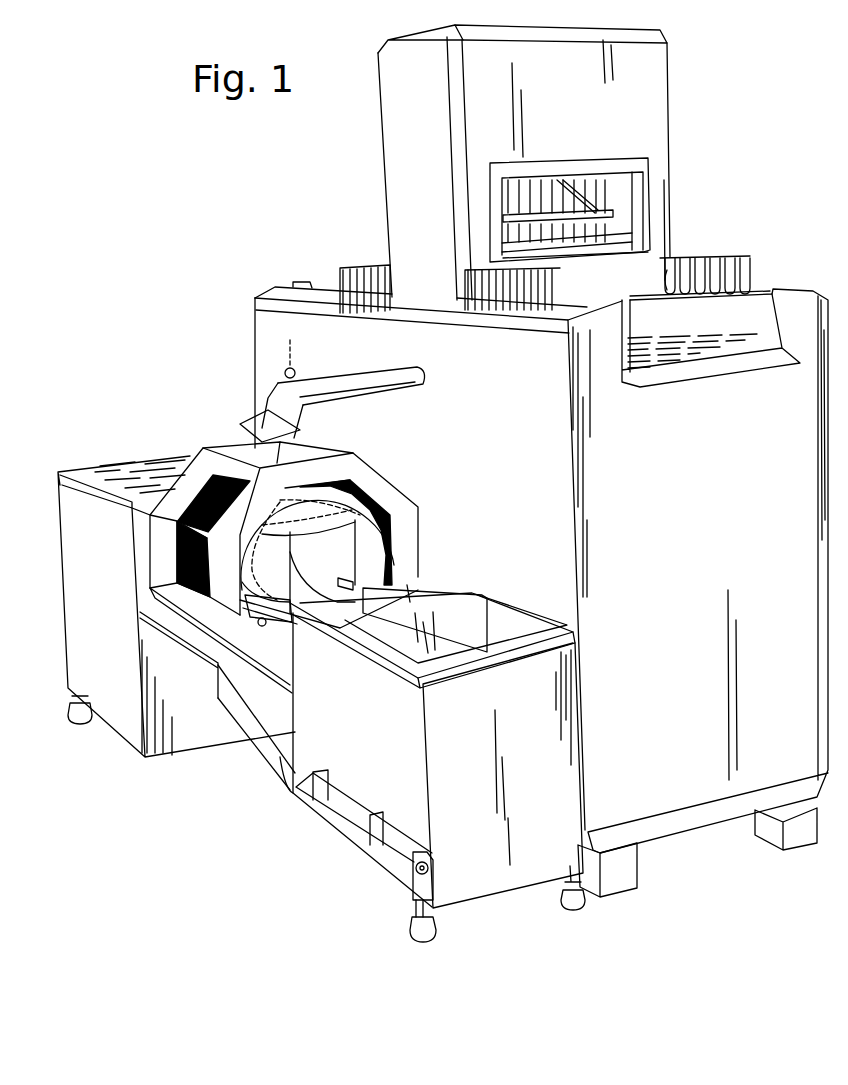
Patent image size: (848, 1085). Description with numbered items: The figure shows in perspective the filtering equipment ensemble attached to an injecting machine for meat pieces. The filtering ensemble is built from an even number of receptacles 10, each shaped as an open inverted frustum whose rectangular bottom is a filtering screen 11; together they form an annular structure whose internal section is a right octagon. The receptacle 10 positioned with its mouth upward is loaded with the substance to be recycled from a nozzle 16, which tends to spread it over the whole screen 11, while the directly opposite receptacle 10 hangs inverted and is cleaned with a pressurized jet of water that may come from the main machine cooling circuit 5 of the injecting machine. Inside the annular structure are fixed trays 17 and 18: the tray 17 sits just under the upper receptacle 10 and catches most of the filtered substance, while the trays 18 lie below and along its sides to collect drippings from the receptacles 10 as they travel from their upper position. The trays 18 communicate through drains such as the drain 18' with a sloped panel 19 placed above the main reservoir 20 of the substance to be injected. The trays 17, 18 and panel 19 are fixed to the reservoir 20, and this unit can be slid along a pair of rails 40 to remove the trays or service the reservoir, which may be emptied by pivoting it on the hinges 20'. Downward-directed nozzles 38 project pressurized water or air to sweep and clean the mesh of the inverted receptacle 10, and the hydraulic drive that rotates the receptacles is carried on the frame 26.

The main machine cooling circuit 5 is at (275, 318).
The receptacles 10 is at (160, 567).
The filtering screens 11 is at (195, 497).
The nozzle 16 is at (265, 425).
The tray 17 is at (310, 522).
The trays 18 is at (413, 546).
The drain 18' is at (443, 596).
The sloped panel 19 is at (303, 587).
The main reservoir 20 is at (437, 751).
The hinges 20' is at (367, 923).
The frame 26 is at (108, 690).
The nozzles 38 is at (289, 602).
The rails 40 is at (382, 843).